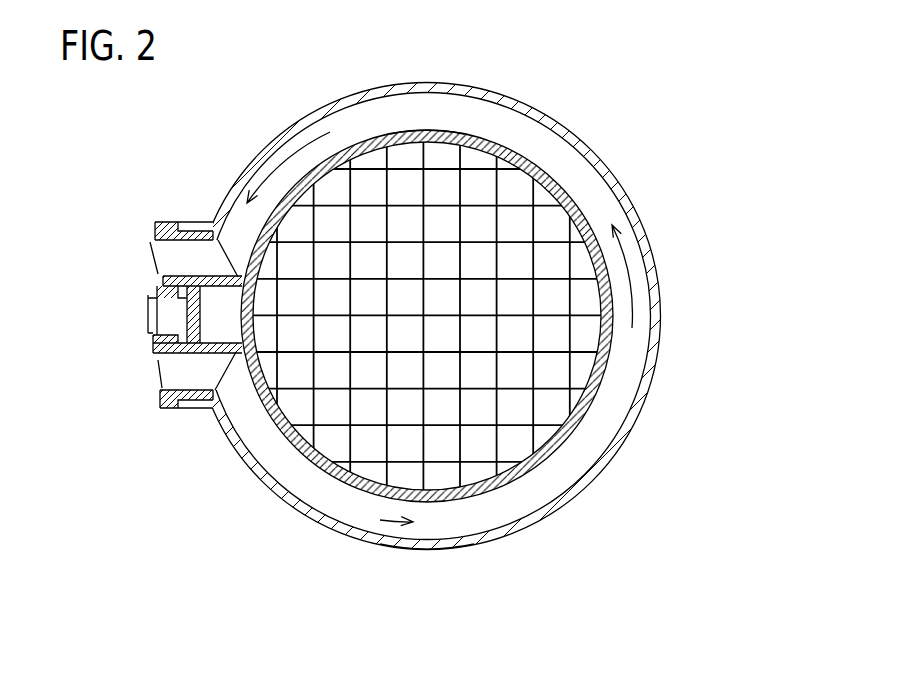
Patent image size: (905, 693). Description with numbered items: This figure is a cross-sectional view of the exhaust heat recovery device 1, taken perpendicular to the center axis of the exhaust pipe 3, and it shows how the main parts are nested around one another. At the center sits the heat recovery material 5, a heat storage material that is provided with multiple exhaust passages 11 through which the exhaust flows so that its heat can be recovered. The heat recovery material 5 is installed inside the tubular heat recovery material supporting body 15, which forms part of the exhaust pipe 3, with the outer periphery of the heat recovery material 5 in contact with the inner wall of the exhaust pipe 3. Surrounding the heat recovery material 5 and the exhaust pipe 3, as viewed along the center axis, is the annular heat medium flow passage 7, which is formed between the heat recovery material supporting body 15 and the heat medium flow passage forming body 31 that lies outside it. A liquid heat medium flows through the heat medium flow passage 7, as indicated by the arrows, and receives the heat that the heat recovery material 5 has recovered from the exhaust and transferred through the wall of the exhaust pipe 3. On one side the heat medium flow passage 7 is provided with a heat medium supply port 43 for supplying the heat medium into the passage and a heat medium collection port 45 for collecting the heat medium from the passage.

The exhaust heat recovery device 1 is at (611, 107).
The exhaust pipe 3 is at (628, 357).
The heat recovery material 5 is at (505, 232).
The heat medium flow passage 7 is at (492, 124).
The exhaust passages 11 is at (517, 400).
The heat recovery material supporting body 15 is at (428, 128).
The heat medium flow passage forming body 31 is at (424, 553).
The heat medium supply port 43 is at (189, 258).
The heat medium collection port 45 is at (198, 372).